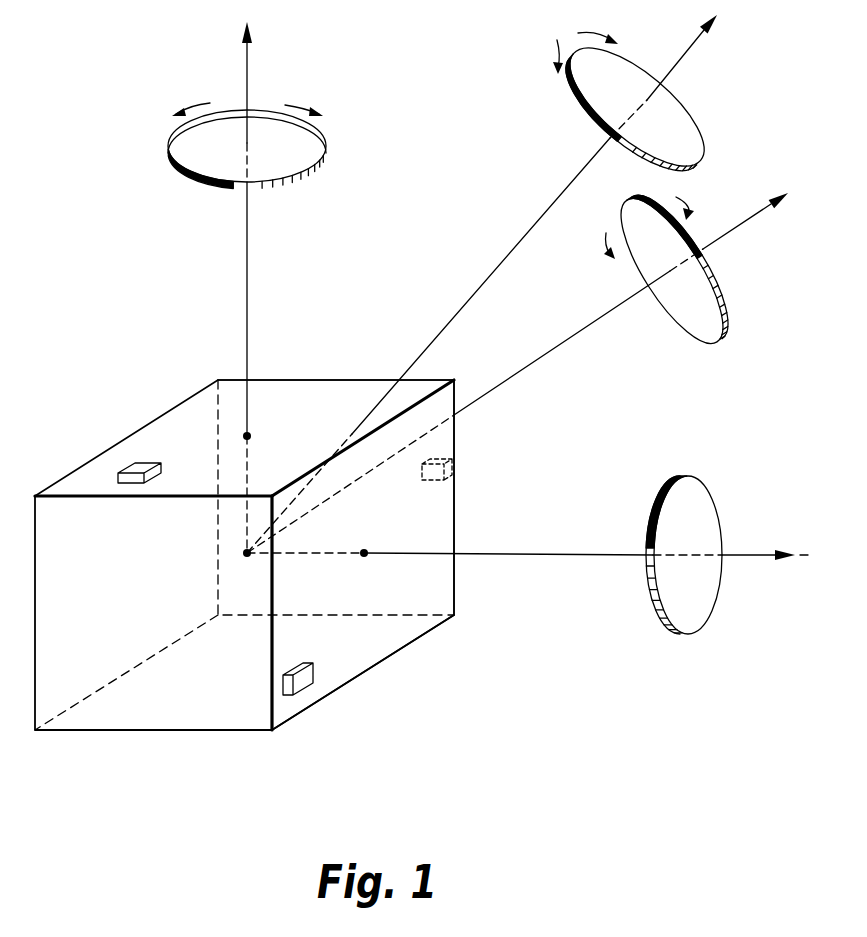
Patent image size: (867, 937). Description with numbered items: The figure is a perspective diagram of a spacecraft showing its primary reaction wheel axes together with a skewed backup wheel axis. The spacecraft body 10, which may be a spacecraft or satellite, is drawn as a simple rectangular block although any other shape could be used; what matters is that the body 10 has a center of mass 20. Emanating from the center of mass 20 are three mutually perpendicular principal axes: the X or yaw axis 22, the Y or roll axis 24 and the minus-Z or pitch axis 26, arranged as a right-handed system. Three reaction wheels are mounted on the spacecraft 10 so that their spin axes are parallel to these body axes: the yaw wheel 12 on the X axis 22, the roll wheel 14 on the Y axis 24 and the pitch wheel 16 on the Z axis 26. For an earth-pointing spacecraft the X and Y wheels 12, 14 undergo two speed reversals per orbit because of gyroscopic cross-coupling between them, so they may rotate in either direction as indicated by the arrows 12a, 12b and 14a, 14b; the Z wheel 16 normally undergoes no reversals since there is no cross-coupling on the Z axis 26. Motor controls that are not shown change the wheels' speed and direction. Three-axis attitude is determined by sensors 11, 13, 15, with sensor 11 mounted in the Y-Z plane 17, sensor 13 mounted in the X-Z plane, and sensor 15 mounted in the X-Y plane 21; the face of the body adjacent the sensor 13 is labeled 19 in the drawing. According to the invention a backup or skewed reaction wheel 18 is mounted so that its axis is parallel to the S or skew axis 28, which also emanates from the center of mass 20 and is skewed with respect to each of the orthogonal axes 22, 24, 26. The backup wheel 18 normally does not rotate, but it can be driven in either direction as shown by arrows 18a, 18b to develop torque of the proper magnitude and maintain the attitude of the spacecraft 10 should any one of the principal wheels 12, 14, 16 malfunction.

The body 10 is at (118, 443).
The sensor 11 is at (150, 462).
The yaw reaction wheel 12 is at (320, 135).
The arrow 12a is at (208, 103).
The arrow 12b is at (295, 104).
The sensor 13 is at (421, 470).
The roll reaction wheel 14 is at (650, 200).
The arrow 14a is at (604, 238).
The arrow 14b is at (690, 213).
The sensor 15 is at (305, 664).
The pitch reaction wheel 16 is at (694, 484).
The Y-Z plane 17 is at (330, 380).
The backup reaction wheel 18 is at (639, 64).
The arrow 18a is at (557, 42).
The arrow 18b is at (586, 33).
The right face of cube 19 is at (455, 505).
The center of mass 20 is at (243, 553).
The X-Y plane 21 is at (353, 653).
The X or yaw axis 22 is at (248, 247).
The Y or roll axis 24 is at (552, 352).
The Z or pitch axis 26 is at (533, 553).
The S or skew axis 28 is at (553, 202).